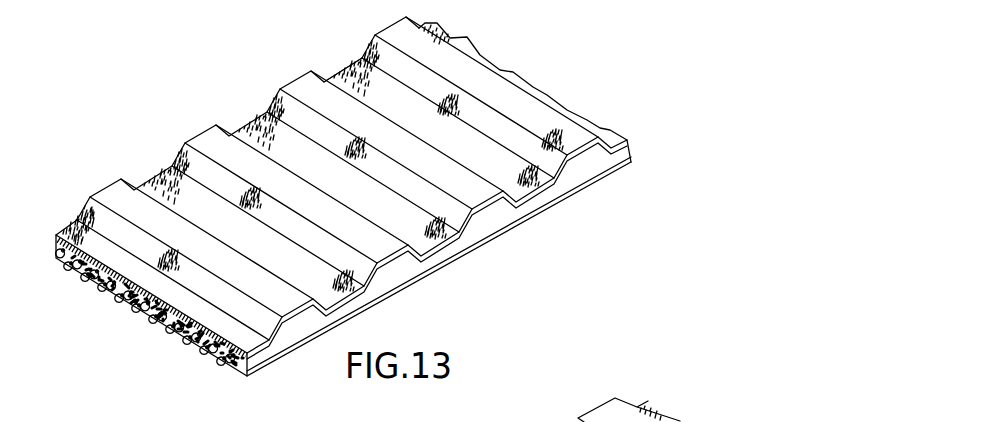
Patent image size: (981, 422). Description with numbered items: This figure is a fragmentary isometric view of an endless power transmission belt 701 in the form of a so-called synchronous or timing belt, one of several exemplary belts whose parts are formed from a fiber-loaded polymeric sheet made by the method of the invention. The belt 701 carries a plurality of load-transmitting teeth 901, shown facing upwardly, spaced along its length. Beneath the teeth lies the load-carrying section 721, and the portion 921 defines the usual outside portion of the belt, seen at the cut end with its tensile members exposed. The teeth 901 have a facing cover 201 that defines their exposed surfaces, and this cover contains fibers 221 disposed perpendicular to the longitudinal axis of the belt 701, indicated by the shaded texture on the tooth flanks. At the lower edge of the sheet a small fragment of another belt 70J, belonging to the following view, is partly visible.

The belt 701 is at (570, 59).
The facing cover 201 is at (202, 139).
The fibers 221 is at (340, 75).
The load-transmitting teeth 901 is at (488, 212).
The portion defining the outside portion of the belt 921 is at (205, 353).
The load-carrying section 721 is at (253, 362).
The belt 70J is at (757, 421).